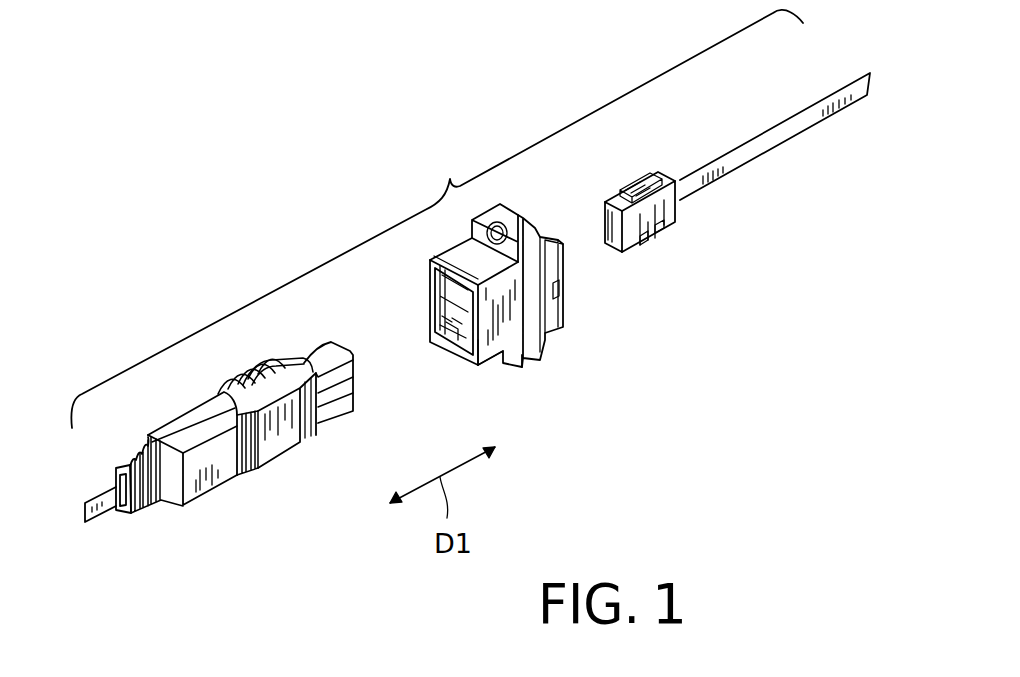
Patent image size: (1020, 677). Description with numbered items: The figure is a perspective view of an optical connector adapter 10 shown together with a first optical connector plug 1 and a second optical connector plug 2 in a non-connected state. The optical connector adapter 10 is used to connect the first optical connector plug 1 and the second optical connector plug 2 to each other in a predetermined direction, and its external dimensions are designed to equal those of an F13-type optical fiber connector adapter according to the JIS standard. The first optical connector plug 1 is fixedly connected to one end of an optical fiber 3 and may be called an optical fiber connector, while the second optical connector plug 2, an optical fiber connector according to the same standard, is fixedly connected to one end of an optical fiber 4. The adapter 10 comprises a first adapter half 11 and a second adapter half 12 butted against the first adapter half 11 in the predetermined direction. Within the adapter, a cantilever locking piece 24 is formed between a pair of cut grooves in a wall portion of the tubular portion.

The first optical connector plug 1 is at (652, 235).
The second optical connector plug 2 is at (219, 460).
The optical fiber 3 is at (780, 137).
The optical fiber 4 is at (105, 513).
The optical connector adapter 10 is at (507, 325).
The first adapter half 11 is at (558, 330).
The second adapter half 12 is at (496, 362).
The cantilever locking piece 24 is at (452, 353).